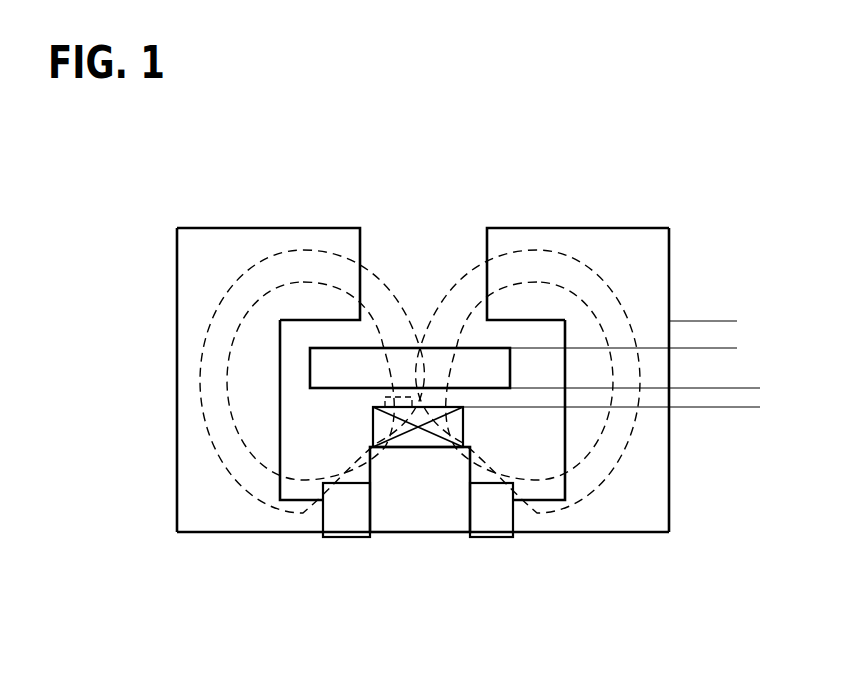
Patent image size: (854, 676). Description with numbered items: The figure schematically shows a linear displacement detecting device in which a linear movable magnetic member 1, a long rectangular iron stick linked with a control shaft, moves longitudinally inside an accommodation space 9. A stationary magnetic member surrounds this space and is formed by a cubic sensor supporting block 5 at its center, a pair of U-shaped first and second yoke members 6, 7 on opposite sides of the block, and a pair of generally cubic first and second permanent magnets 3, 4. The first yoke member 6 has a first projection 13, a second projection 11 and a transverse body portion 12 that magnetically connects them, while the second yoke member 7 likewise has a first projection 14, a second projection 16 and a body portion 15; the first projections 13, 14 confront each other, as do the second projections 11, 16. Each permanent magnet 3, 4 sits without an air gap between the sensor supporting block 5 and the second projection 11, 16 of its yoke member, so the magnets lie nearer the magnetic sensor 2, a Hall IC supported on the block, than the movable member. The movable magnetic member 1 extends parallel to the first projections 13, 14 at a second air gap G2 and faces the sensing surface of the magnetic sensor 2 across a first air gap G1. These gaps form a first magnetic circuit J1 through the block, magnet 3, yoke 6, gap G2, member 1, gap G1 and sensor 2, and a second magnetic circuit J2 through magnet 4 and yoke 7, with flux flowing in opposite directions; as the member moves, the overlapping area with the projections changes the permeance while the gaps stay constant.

The movable magnetic member 1 is at (333, 357).
The magnetic sensor 2 is at (408, 432).
The first permanent magnet 3 is at (347, 532).
The second permanent magnet 4 is at (495, 535).
The sensor supporting block 5 is at (440, 518).
The first yoke member 6 is at (250, 379).
The second yoke member 7 is at (601, 380).
The accommodation space 9 is at (322, 451).
The second projection 11 is at (302, 520).
The body portion 12 is at (177, 393).
The first projection 13 is at (348, 240).
The first projection 14 is at (503, 238).
The body portion 15 is at (657, 425).
The second projection 16 is at (538, 525).
The first magnetic circuit J1 is at (203, 343).
The second magnetic circuit J2 is at (627, 292).
The first air gap G1 is at (747, 362).
The second air gap G2 is at (720, 322).